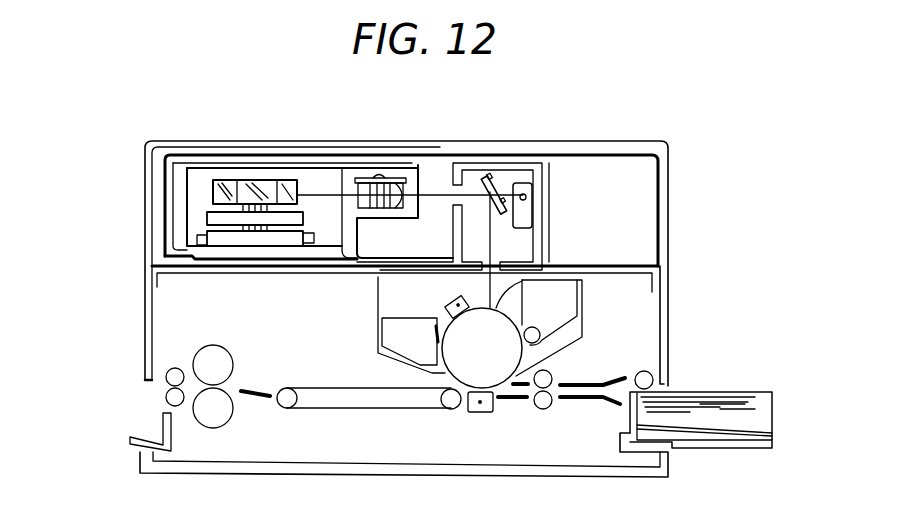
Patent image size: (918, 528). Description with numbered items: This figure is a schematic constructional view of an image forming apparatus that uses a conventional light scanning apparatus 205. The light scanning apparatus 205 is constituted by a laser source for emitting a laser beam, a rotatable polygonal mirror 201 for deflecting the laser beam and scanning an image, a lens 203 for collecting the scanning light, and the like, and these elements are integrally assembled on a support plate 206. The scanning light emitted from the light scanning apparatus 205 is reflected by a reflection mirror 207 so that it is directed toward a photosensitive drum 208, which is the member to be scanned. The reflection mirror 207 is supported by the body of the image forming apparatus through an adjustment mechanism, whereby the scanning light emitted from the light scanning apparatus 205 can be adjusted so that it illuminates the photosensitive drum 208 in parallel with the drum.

The rotatable polygonal mirror 201 is at (286, 180).
The lens 203 is at (413, 184).
The light scanning apparatus 205 is at (230, 160).
The support plate 206 is at (163, 162).
The reflection mirror 207 is at (497, 183).
The photosensitive drum 208 is at (557, 270).